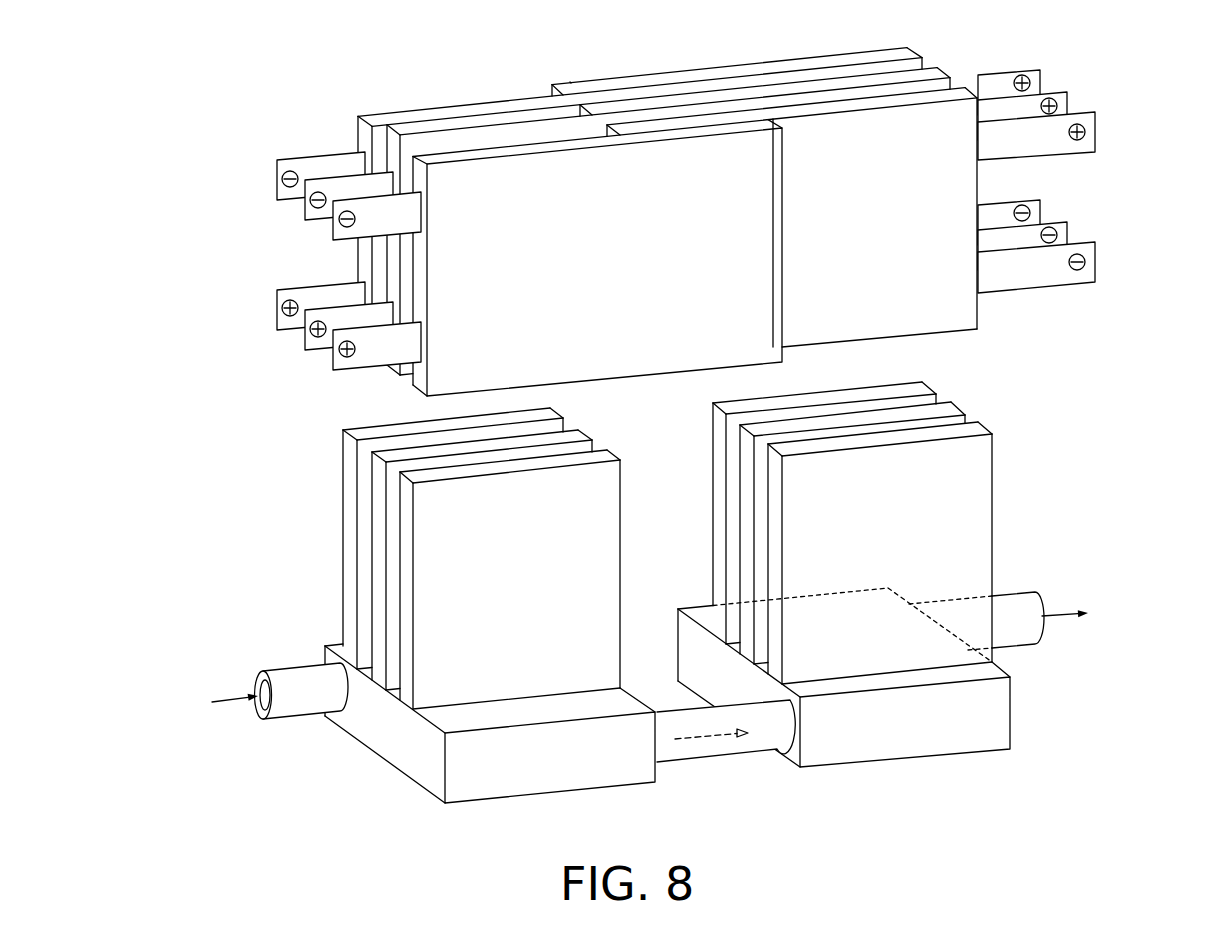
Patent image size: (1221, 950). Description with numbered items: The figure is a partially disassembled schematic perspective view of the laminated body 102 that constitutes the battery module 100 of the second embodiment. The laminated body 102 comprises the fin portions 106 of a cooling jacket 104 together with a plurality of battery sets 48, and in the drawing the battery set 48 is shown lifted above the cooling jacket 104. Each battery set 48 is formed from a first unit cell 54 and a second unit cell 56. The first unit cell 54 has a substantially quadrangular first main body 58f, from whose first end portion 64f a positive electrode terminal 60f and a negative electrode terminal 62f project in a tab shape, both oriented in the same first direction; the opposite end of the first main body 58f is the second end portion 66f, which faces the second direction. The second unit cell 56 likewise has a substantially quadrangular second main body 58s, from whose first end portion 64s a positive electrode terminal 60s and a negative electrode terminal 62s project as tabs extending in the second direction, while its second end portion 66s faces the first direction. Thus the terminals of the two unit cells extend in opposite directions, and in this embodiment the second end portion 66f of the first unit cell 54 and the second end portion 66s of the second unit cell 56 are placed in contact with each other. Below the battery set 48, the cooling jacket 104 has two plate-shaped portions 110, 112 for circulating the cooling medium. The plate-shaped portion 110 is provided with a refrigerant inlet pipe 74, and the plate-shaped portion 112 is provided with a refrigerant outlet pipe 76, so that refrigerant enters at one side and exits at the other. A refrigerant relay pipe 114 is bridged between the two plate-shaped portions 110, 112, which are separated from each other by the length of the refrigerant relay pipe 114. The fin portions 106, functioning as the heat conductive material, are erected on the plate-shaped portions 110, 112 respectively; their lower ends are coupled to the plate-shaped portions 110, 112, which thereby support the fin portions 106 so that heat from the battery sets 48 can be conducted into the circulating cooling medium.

The battery module 100 is at (172, 97).
The laminated body 102 is at (332, 94).
The cooling jacket 104 is at (322, 743).
The battery set 48 is at (444, 12).
The first unit cell 54 is at (486, 98).
The second unit cell 56 is at (551, 80).
The first main body 58f is at (636, 358).
The second main body 58s is at (932, 315).
The positive electrode terminal 60f is at (333, 362).
The negative electrode terminal 62f is at (333, 230).
The positive electrode terminal 60s is at (1040, 78).
The negative electrode terminal 62s is at (1040, 207).
The first end portion 64f is at (447, 180).
The first end portion 64s is at (960, 110).
The second end portion 66f is at (702, 93).
The second end portion 66s is at (570, 82).
The refrigerant inlet pipe 74 is at (300, 680).
The refrigerant outlet pipe 76 is at (1015, 595).
The fin portions 106 is at (407, 503).
The plate-shaped portion 110 is at (385, 738).
The plate-shaped portion 112 is at (938, 733).
The refrigerant relay pipe 114 is at (739, 747).